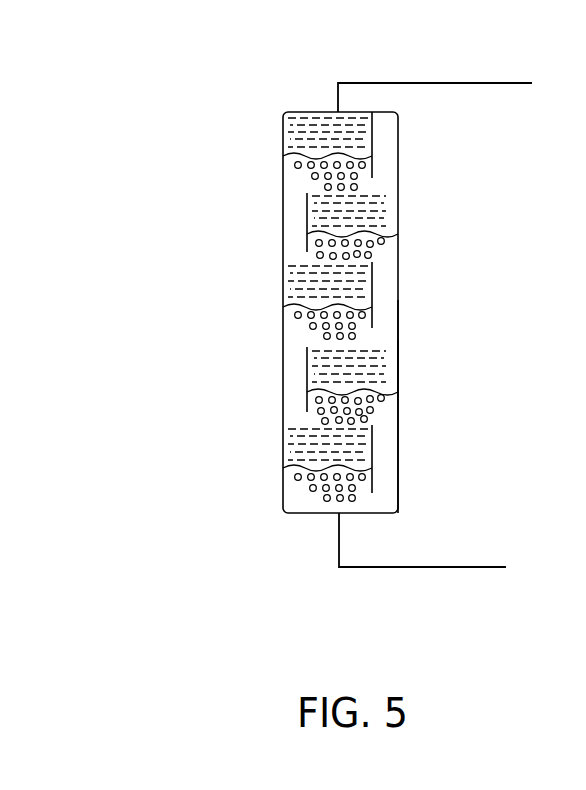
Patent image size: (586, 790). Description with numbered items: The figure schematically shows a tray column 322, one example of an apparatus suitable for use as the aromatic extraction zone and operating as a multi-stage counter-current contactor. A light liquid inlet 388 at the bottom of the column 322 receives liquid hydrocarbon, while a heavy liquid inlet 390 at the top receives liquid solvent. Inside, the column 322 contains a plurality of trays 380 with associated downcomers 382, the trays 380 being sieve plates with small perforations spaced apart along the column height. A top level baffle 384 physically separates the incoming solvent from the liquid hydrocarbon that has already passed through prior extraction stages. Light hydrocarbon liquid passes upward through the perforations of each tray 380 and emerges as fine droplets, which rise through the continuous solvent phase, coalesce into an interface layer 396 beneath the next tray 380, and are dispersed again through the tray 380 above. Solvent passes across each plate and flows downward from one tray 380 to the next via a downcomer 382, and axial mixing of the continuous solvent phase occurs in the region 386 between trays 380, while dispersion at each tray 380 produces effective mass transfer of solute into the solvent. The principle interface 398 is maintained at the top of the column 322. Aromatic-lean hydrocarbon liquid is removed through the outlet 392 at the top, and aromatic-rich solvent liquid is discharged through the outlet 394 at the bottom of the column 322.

The tray column 322 is at (140, 60).
The tray 380 is at (357, 352).
The downcomer 382 is at (372, 284).
The top level baffle 384 is at (385, 130).
The region between trays 386 is at (428, 369).
The light liquid inlet 388 is at (398, 460).
The heavy liquid inlet 390 is at (398, 142).
The outlet 392 is at (435, 83).
The outlet 394 is at (422, 540).
The interface layer 396 is at (336, 389).
The principle interface 398 is at (305, 152).